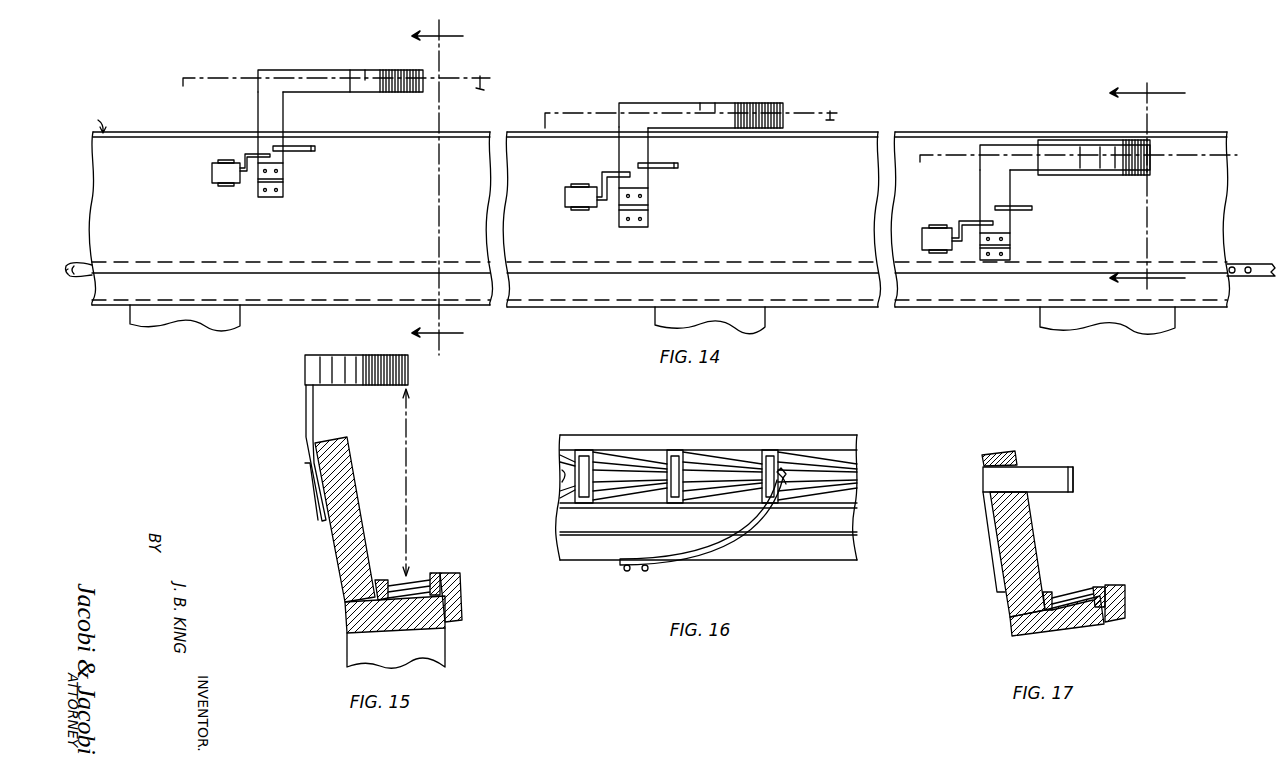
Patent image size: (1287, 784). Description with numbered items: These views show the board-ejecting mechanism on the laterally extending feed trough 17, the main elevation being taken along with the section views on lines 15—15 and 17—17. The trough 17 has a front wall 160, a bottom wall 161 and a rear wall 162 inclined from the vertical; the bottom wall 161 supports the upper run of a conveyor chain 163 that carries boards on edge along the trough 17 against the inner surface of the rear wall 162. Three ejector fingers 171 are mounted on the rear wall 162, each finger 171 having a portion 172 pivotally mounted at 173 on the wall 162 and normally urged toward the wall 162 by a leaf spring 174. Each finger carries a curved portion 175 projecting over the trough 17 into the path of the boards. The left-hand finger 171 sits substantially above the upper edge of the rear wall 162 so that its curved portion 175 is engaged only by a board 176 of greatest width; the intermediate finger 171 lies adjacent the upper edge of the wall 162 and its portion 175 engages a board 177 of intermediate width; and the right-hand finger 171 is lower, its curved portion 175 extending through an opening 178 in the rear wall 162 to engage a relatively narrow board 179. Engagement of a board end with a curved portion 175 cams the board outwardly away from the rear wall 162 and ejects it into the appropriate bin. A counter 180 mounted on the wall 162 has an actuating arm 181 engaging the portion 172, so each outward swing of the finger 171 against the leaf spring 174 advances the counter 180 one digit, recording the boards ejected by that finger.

In FIG. 14, the trough 15 is at (437, 185).
In FIG. 14, the laterally extending feed trough 17 is at (629, 184).
In FIG. 15, the front wall 160 is at (460, 596).
In FIG. 16, the front wall 160 is at (848, 440).
In FIG. 17, the front wall 160 is at (1125, 590).
In FIG. 15, the bottom wall 161 is at (445, 626).
In FIG. 17, the bottom wall 161 is at (1104, 624).
In FIG. 14, the rear wall 162 is at (143, 133).
In FIG. 15, the rear wall 162 is at (351, 462).
In FIG. 16, the rear wall 162 is at (848, 556).
In FIG. 17, the rear wall 162 is at (1021, 554).
In FIG. 15, the conveyor chain 163 is at (440, 573).
In FIG. 16, the conveyor chain 163 is at (731, 476).
In FIG. 17, the conveyor chain 163 is at (1095, 587).
In FIG. 14, the ejector finger 171 is at (366, 68).
In FIG. 15, the ejector finger 171 is at (360, 347).
In FIG. 16, the ejector finger 171 is at (708, 560).
In FIG. 17, the ejector finger 171 is at (1040, 466).
In FIG. 14, the portion of ejector finger 172 is at (258, 122).
In FIG. 15, the portion of ejector finger 172 is at (306, 421).
In FIG. 17, the portion of ejector finger 172 is at (986, 542).
In FIG. 14, the pivot 173 is at (283, 182).
In FIG. 14, the leaf spring 174 is at (315, 150).
In FIG. 15, the curved portion 175 is at (386, 354).
In FIG. 16, the curved portion 175 is at (778, 500).
In FIG. 17, the curved portion 175 is at (1065, 468).
In FIG. 14, the board of greatest width 176 is at (486, 82).
In FIG. 14, the board of intermediate width 177 is at (834, 114).
In FIG. 14, the opening 178 is at (1150, 166).
In FIG. 17, the opening 178 is at (983, 470).
In FIG. 14, the narrow board 179 is at (1237, 156).
In FIG. 14, the counter 180 is at (214, 182).
In FIG. 14, the actuating arm 181 is at (246, 158).